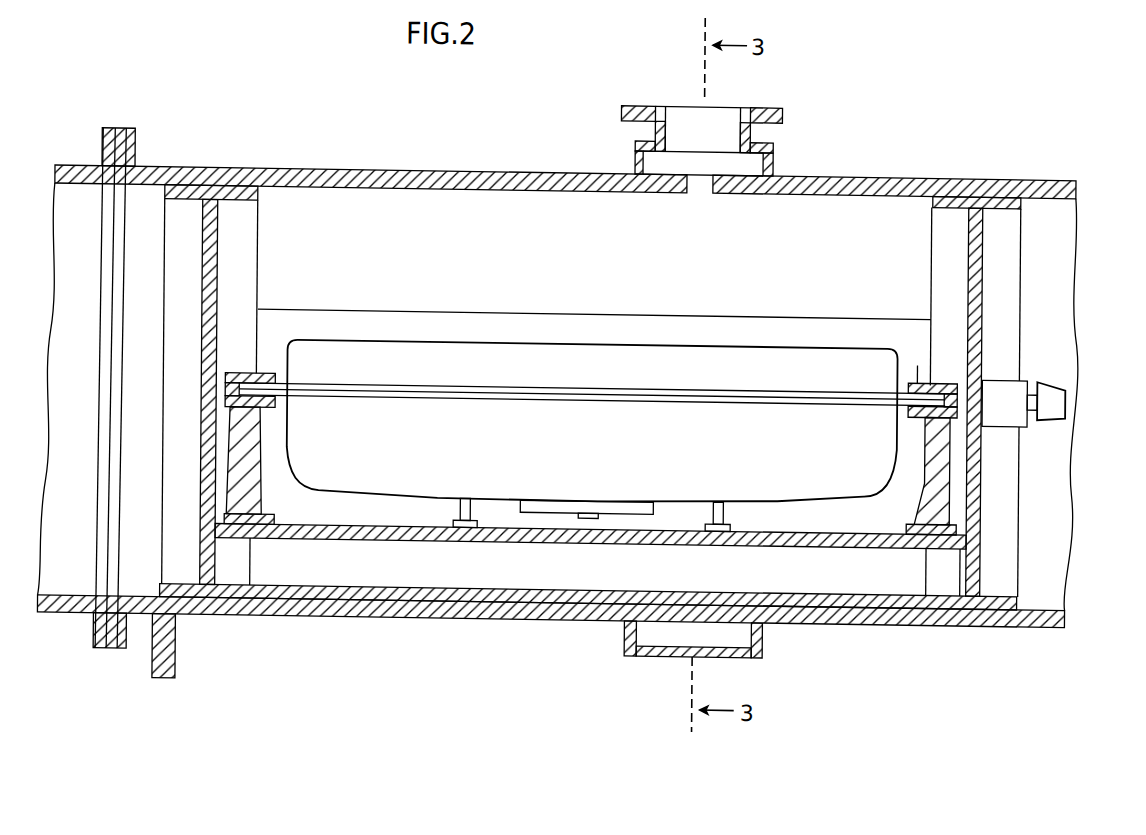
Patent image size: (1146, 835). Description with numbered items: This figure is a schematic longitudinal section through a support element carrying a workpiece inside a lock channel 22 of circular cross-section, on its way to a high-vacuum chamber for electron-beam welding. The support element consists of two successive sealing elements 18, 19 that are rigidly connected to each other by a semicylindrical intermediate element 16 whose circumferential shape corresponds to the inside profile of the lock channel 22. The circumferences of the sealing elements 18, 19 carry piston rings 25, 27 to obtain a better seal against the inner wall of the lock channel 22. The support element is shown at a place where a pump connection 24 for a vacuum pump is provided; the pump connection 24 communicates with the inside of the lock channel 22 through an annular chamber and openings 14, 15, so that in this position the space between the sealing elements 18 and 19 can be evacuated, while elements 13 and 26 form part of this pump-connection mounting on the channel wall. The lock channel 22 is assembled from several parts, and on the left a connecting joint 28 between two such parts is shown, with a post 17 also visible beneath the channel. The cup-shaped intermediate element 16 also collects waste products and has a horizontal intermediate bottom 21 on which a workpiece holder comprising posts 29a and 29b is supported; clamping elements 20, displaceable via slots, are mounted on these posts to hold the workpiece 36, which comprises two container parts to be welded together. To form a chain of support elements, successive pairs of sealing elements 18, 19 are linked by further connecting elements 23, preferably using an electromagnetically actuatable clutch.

The mounting ring 13 is at (633, 136).
The opening 14 is at (697, 178).
The opening 15 is at (689, 604).
The semicylindrical intermediate element 16 is at (841, 306).
The support post 17 is at (182, 658).
The sealing element 18 is at (217, 551).
The sealing element 19 is at (973, 544).
The clamping elements 20 is at (262, 373).
The horizontal intermediate bottom 21 is at (400, 530).
The lock channel 22 is at (447, 620).
The connecting element 23 is at (1062, 380).
The pump connection 24 is at (722, 120).
The piston ring 25 is at (163, 584).
The gasket 26 is at (771, 149).
The piston ring 27 is at (1017, 592).
The connecting joint 28 is at (117, 127).
The post 29a is at (312, 454).
The post 29b is at (930, 463).
The workpiece 36 is at (434, 351).